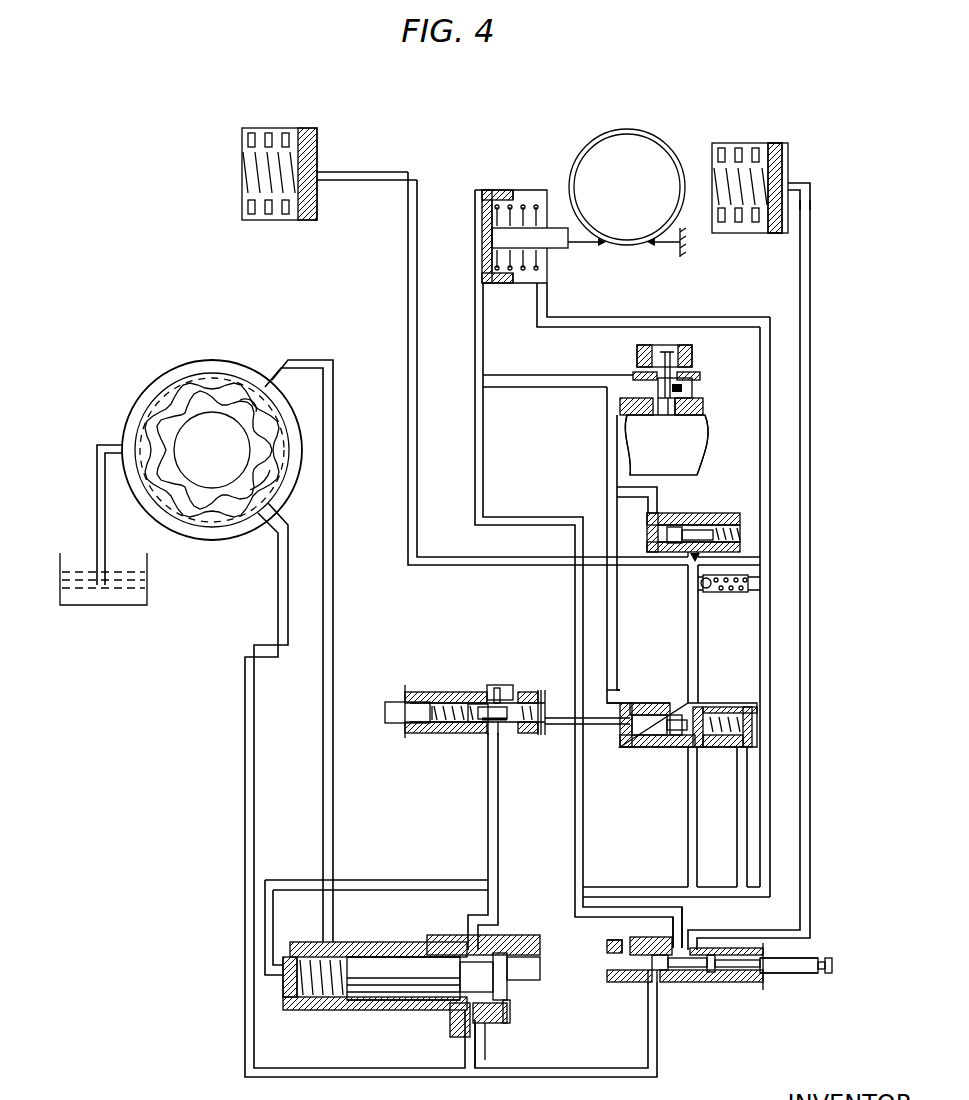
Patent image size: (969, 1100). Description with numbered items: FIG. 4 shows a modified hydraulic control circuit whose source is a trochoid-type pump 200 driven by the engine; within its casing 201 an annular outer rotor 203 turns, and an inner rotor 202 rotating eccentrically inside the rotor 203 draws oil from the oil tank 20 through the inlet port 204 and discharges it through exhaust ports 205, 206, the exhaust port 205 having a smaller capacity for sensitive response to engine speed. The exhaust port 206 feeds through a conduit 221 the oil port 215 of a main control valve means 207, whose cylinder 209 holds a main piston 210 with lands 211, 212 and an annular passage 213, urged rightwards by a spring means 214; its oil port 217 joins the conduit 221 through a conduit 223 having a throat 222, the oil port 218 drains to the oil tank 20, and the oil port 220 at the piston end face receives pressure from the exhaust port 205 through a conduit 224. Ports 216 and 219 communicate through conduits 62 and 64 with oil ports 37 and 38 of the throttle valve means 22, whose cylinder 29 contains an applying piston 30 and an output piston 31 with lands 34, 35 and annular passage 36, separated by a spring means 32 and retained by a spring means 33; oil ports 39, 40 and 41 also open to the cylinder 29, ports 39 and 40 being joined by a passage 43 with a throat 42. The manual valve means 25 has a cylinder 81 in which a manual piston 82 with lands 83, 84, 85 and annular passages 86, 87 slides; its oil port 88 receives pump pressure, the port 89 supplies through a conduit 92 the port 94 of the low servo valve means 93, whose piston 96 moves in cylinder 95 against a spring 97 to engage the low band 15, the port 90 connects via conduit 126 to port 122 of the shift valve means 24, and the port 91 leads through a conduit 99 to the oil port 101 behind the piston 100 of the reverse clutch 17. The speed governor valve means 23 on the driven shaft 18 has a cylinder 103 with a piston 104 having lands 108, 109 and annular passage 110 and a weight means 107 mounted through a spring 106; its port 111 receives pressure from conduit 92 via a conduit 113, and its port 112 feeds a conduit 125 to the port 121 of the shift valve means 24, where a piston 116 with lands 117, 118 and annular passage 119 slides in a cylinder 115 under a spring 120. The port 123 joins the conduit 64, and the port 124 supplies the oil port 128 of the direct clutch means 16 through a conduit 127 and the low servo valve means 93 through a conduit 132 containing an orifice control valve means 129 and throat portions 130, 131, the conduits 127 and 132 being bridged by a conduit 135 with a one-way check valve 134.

The low band 15 is at (606, 140).
The direct clutch means 16 is at (286, 128).
The reverse clutch 17 is at (752, 148).
The driven shaft 18 is at (700, 462).
The oil tank 20 is at (147, 590).
The throttle valve means 22 is at (386, 692).
The speed governor valve means 23 is at (718, 371).
The shift valve means 24 is at (749, 690).
The manual valve means 25 is at (815, 1019).
The cylinder 29 is at (425, 733).
The applying piston 30 is at (385, 712).
The output piston 31 is at (466, 705).
The spring means 32 is at (445, 733).
The spring means 33 is at (560, 721).
The larger diameter land 34 is at (440, 703).
The larger diameter land 35 is at (512, 731).
The annular passage 36 is at (478, 705).
The oil port 37 is at (500, 735).
The oil port 38 is at (488, 742).
The oil port 39 is at (488, 698).
The oil port 40 is at (527, 702).
The oil port 41 is at (476, 733).
The throat 42 is at (497, 688).
The passage 43 is at (512, 694).
The conduit 62 is at (498, 838).
The conduit 64 is at (413, 880).
The cylinder 81 is at (770, 985).
The manual piston 82 is at (832, 962).
The land 83 is at (661, 972).
The land 84 is at (712, 975).
The land 85 is at (800, 975).
The annular passage 86 is at (686, 975).
The annular passage 87 is at (740, 975).
The oil port 88 is at (650, 984).
The oil port 89 is at (684, 946).
The oil port 90 is at (702, 950).
The oil port 91 is at (612, 942).
The conduit 92 is at (483, 462).
The low servo valve means 93 is at (468, 190).
The port 94 is at (487, 280).
The cylinder 95 is at (531, 192).
The piston 96 is at (491, 190).
The spring 97 is at (548, 270).
The conduit 99 is at (810, 498).
The piston 100 is at (775, 233).
The oil port 101 is at (790, 186).
The cylinder 103 is at (694, 385).
The piston 104 is at (664, 415).
The spring 106 is at (673, 352).
The weight means 107 is at (637, 356).
The land 108 is at (645, 430).
The land 109 is at (684, 390).
The annular passage 110 is at (703, 410).
The oil port 111 is at (633, 376).
The oil port 112 is at (620, 406).
The conduit 113 is at (543, 387).
The cylinder 115 is at (636, 703).
The piston 116 is at (676, 736).
The land 117 is at (648, 736).
The land 118 is at (720, 712).
The annular passage 119 is at (662, 712).
The spring 120 is at (750, 709).
The oil port 121 is at (624, 706).
The oil port 122 is at (698, 750).
The oil port 123 is at (748, 749).
The oil port 124 is at (690, 690).
The conduit 125 is at (617, 637).
The conduit 126 is at (688, 832).
The conduit 127 is at (408, 346).
The oil port 128 is at (320, 172).
The orifice control valve means 129 is at (714, 514).
The throat portion 130 is at (690, 570).
The throat portion 131 is at (705, 558).
The conduit 132 is at (760, 498).
The one-way check valve 134 is at (722, 593).
The conduit 135 is at (758, 590).
The trochoid-type pump 200 is at (108, 388).
The casing 201 is at (152, 380).
The inner rotor 202 is at (226, 416).
The annular outer rotor 203 is at (240, 385).
The inlet port 204 is at (200, 378).
The exhaust port 205 is at (252, 410).
The exhaust port 206 is at (272, 470).
The main control valve means 207 is at (281, 1005).
The cylinder 209 is at (308, 1012).
The main piston 210 is at (362, 1012).
The land 211 is at (501, 955).
The land 212 is at (392, 1002).
The annular passage 213 is at (432, 941).
The spring means 214 is at (322, 1002).
The oil port 215 is at (458, 1014).
The oil port 216 is at (466, 962).
The oil port 217 is at (511, 1012).
The oil port 218 is at (420, 1012).
The oil port 219 is at (275, 958).
The oil port 220 is at (540, 969).
The conduit 221 is at (245, 755).
The throat 222 is at (482, 1022).
The conduit 223 is at (505, 1025).
The conduit 224 is at (334, 640).